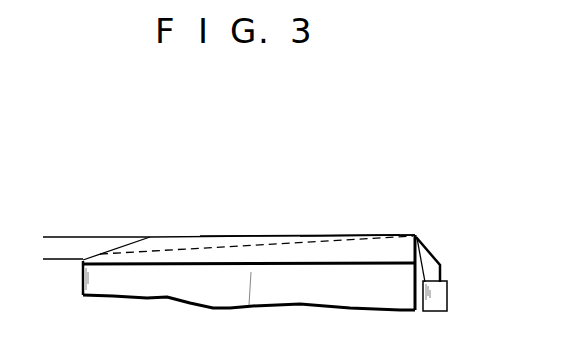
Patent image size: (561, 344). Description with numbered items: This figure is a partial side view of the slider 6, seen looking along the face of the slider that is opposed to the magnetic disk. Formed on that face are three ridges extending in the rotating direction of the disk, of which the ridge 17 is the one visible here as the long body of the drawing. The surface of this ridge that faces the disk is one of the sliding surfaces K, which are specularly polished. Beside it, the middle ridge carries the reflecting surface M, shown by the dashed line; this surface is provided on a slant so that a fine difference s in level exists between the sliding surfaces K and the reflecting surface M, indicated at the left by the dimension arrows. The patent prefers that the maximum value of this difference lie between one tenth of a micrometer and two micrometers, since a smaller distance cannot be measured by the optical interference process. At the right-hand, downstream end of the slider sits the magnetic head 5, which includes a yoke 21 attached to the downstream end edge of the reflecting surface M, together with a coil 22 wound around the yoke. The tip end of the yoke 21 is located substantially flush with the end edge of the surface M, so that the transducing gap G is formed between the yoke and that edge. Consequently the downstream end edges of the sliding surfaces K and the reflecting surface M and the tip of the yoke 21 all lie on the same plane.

The magnetic head 5 is at (456, 239).
The slider 6 is at (157, 226).
The reflecting surface M is at (178, 250).
The sliding surfaces K is at (285, 235).
The ridge 17 is at (343, 240).
The transducing gap G is at (417, 235).
The yoke 21 is at (438, 262).
The coil 22 is at (447, 298).
The difference in level S is at (63, 298).